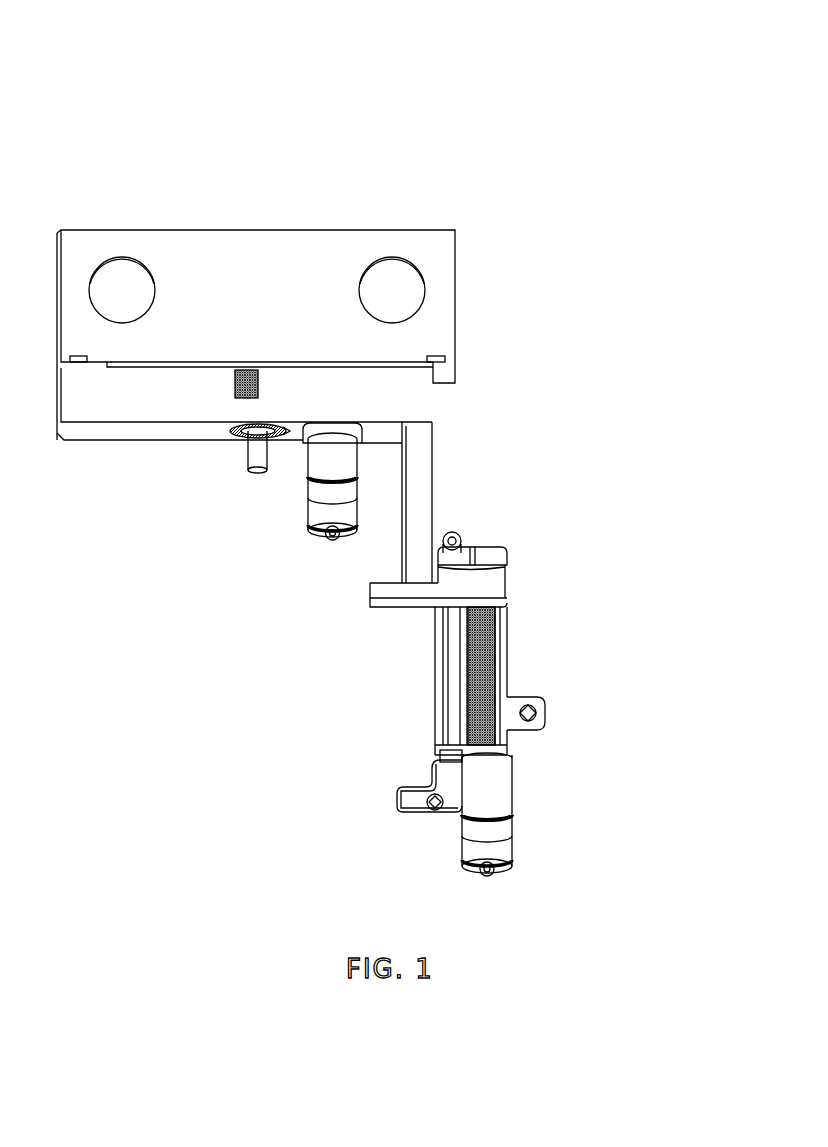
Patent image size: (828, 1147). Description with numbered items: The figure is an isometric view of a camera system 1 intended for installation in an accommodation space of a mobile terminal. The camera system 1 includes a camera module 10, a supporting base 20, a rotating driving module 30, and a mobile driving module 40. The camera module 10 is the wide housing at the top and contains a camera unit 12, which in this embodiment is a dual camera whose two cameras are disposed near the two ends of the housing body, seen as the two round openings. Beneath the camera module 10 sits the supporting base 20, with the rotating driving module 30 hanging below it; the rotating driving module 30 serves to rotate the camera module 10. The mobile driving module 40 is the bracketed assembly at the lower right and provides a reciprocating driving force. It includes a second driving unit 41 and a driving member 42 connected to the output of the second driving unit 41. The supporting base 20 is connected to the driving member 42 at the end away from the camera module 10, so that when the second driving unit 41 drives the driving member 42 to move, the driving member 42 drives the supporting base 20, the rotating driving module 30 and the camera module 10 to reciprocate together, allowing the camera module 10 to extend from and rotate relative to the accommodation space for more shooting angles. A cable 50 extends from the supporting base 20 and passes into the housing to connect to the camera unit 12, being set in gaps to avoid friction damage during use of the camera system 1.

The camera system 1 is at (330, 46).
The camera module 10 is at (329, 295).
The camera unit 12 is at (405, 268).
The supporting base 20 is at (415, 407).
The rotating driving module 30 is at (340, 485).
The mobile driving module 40 is at (641, 563).
The second driving unit 41 is at (490, 795).
The driving member 42 is at (495, 578).
The cable 50 is at (255, 447).